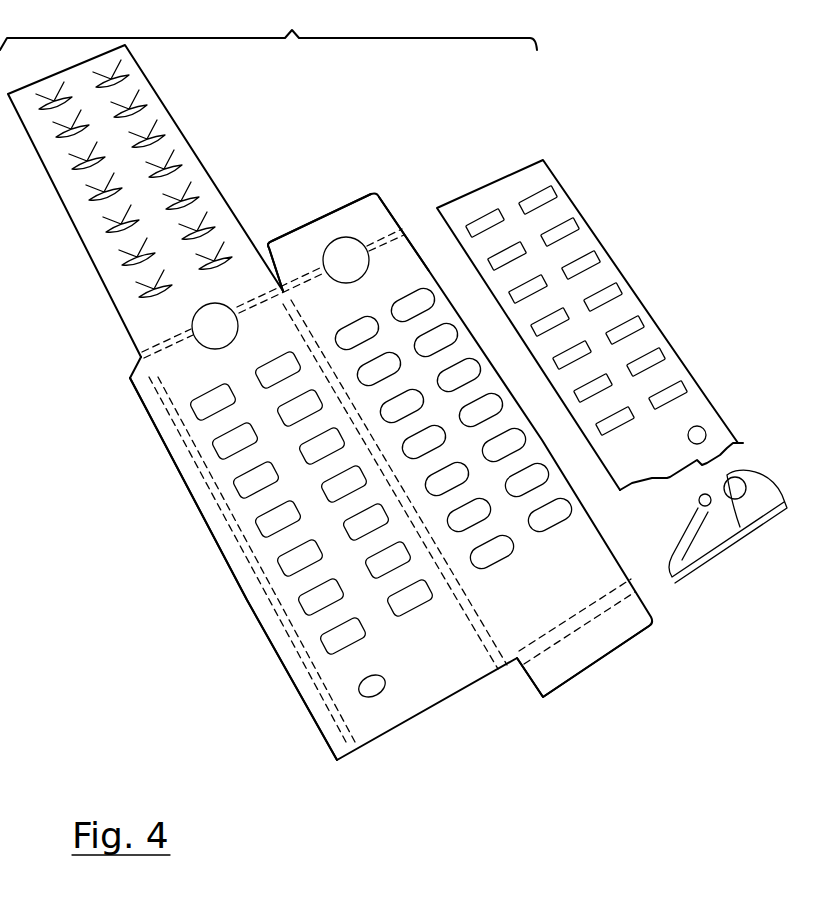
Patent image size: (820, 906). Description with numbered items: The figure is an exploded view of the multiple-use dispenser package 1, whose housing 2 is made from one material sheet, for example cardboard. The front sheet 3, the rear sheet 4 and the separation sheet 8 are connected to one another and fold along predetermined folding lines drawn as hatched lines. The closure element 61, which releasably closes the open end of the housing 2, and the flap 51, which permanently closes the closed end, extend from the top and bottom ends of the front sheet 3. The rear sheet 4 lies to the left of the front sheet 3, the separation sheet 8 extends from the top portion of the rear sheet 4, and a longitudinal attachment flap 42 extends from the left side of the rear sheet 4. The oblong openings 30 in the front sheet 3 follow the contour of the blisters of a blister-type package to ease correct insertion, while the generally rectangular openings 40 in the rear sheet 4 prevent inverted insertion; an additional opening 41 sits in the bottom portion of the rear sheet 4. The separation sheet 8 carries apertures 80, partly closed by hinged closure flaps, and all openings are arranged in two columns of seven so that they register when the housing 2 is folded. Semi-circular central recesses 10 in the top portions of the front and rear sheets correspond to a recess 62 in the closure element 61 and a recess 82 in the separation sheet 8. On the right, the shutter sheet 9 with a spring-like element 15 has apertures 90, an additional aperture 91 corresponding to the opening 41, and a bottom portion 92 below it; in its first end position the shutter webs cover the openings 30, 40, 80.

The multiple-use dispenser package 1 is at (303, 27).
The housing 2 is at (167, 447).
The front sheet 3 is at (405, 258).
The rear sheet 4 is at (430, 688).
The separation sheet 8 is at (50, 160).
The apertures 80 is at (118, 230).
The recess 82 is at (207, 317).
The semi-circular central recesses 10 is at (213, 340).
The spring-like element 15 is at (750, 525).
The oblong openings 30 is at (547, 522).
The openings 40 is at (298, 555).
The additional opening 41 is at (370, 692).
The longitudinal attachment flap 42 is at (203, 488).
The flap 51 is at (598, 643).
The closure element 61 is at (287, 252).
The recess 62 is at (336, 247).
The shutter sheet 9 is at (587, 240).
The apertures 90 is at (640, 320).
The additional aperture 91 is at (703, 427).
The bottom portion 92 is at (745, 443).